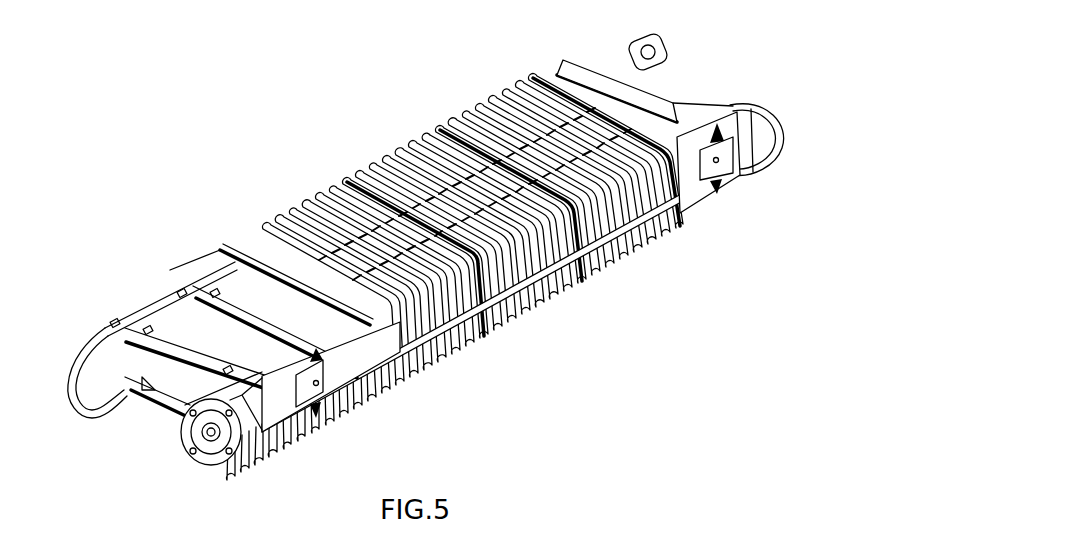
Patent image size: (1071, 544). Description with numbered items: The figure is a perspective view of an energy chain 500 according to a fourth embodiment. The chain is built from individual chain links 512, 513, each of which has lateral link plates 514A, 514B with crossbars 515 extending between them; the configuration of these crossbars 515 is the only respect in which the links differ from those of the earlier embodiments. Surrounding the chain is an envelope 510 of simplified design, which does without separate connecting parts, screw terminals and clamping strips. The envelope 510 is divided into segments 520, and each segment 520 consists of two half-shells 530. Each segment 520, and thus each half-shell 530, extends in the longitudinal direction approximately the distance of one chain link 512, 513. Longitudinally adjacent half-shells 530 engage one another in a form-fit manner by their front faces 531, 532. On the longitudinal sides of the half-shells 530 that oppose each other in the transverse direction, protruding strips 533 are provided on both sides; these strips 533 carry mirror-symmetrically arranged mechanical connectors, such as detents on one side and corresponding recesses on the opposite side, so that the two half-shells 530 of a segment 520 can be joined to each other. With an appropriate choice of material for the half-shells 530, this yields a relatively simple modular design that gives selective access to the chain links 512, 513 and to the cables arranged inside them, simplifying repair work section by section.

The energy chain 500 is at (207, 123).
The envelope 510 is at (404, 124).
The chain link 512 is at (43, 317).
The chain link 513 is at (132, 282).
The lateral link plate 514A is at (653, 55).
The lateral link plate 514B is at (112, 388).
The crossbar 515 is at (690, 97).
The segment 520 is at (592, 295).
The half-shell 530 is at (343, 188).
The front face 531 is at (544, 77).
The front face 532 is at (213, 262).
The protruding strip 533 is at (363, 407).